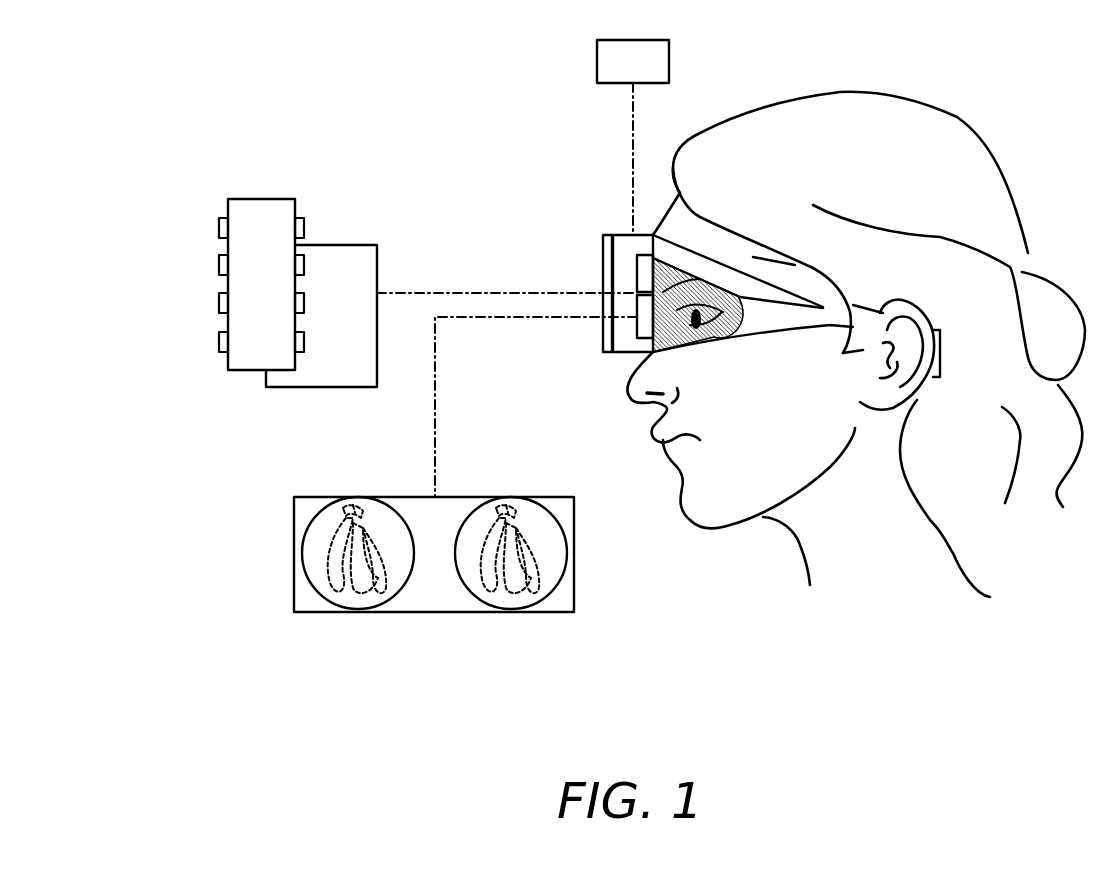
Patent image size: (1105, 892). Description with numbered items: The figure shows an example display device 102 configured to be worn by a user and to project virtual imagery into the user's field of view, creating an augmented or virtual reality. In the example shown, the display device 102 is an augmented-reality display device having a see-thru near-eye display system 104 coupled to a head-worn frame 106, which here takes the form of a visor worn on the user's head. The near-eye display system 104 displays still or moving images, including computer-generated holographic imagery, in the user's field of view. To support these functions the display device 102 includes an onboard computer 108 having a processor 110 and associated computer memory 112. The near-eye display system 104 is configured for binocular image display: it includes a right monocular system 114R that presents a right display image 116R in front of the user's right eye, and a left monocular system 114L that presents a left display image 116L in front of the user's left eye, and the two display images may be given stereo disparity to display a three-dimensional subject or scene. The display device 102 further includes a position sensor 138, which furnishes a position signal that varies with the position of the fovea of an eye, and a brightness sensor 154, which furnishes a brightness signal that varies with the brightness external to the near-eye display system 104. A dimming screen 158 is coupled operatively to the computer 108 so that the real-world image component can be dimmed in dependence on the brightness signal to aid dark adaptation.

The display device 102 is at (685, 284).
The near-eye display system 104 is at (424, 560).
The head-worn frame 106 is at (863, 303).
The onboard computer 108 is at (298, 270).
The processor 110 is at (315, 329).
The computer memory 112 is at (244, 297).
The right monocular system 114R is at (307, 529).
The left monocular system 114L is at (549, 583).
The right display image 116R is at (386, 519).
The left display image 116L is at (475, 580).
The position sensor 138 is at (637, 272).
The brightness sensor 154 is at (615, 74).
The dimming screen 158 is at (637, 337).